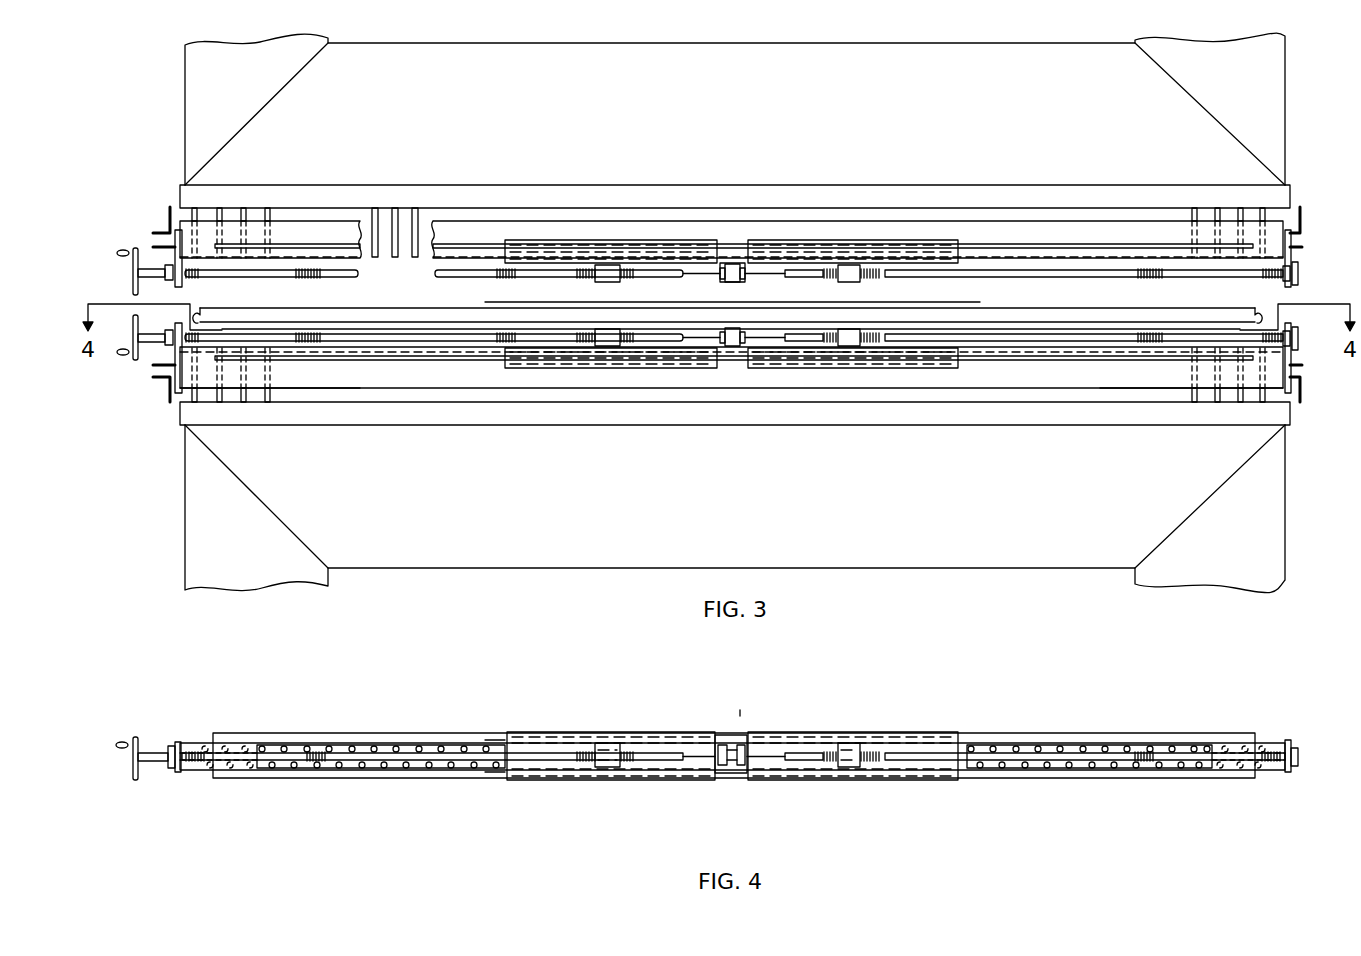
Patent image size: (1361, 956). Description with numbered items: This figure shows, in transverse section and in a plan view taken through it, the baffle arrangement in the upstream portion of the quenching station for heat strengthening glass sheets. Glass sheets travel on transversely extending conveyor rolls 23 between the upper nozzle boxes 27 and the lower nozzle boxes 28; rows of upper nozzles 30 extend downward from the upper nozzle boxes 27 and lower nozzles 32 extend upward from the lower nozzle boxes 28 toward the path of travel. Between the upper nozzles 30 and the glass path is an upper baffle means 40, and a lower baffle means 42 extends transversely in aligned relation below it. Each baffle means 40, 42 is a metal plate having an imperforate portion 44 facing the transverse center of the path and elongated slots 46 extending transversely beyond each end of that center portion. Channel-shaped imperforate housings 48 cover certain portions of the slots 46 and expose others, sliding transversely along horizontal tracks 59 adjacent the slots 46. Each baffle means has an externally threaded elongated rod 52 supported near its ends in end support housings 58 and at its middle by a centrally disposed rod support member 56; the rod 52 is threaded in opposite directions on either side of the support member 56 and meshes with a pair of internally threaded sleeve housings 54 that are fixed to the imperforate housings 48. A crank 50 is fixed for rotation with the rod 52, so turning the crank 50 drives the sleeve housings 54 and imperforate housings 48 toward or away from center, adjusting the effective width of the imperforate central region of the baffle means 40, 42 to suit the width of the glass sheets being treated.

In FIG. 3, the conveyor rolls 23 is at (1192, 310).
In FIG. 3, the upper nozzle boxes 27 is at (634, 195).
In FIG. 3, the lower nozzle boxes 28 is at (585, 420).
In FIG. 3, the upper nozzles 30 is at (205, 240).
In FIG. 3, the lower nozzles 32 is at (195, 395).
In FIG. 4, the lower nozzles 32 is at (268, 745).
In FIG. 3, the upper baffle means 40 is at (989, 210).
In FIG. 3, the lower baffle means 42 is at (986, 405).
In FIG. 4, the lower baffle means 42 is at (722, 720).
In FIG. 3, the imperforate portion 44 is at (740, 263).
In FIG. 4, the imperforate portion 44 is at (720, 773).
In FIG. 3, the elongated slots 46 is at (250, 258).
In FIG. 4, the elongated slots 46 is at (405, 760).
In FIG. 3, the imperforate housings 48 is at (692, 240).
In FIG. 4, the imperforate housings 48 is at (640, 732).
In FIG. 3, the crank 50 is at (130, 300).
In FIG. 4, the crank 50 is at (135, 737).
In FIG. 3, the elongated rod 52 is at (1035, 328).
In FIG. 4, the elongated rod 52 is at (480, 717).
In FIG. 3, the internally threaded sleeve housings 54 is at (607, 330).
In FIG. 4, the internally threaded sleeve housings 54 is at (610, 768).
In FIG. 3, the rod support member 56 is at (735, 328).
In FIG. 4, the rod support member 56 is at (735, 740).
In FIG. 3, the end support housings 58 is at (1291, 262).
In FIG. 4, the end support housings 58 is at (180, 772).
In FIG. 3, the tracks 59 is at (448, 252).
In FIG. 4, the tracks 59 is at (333, 778).